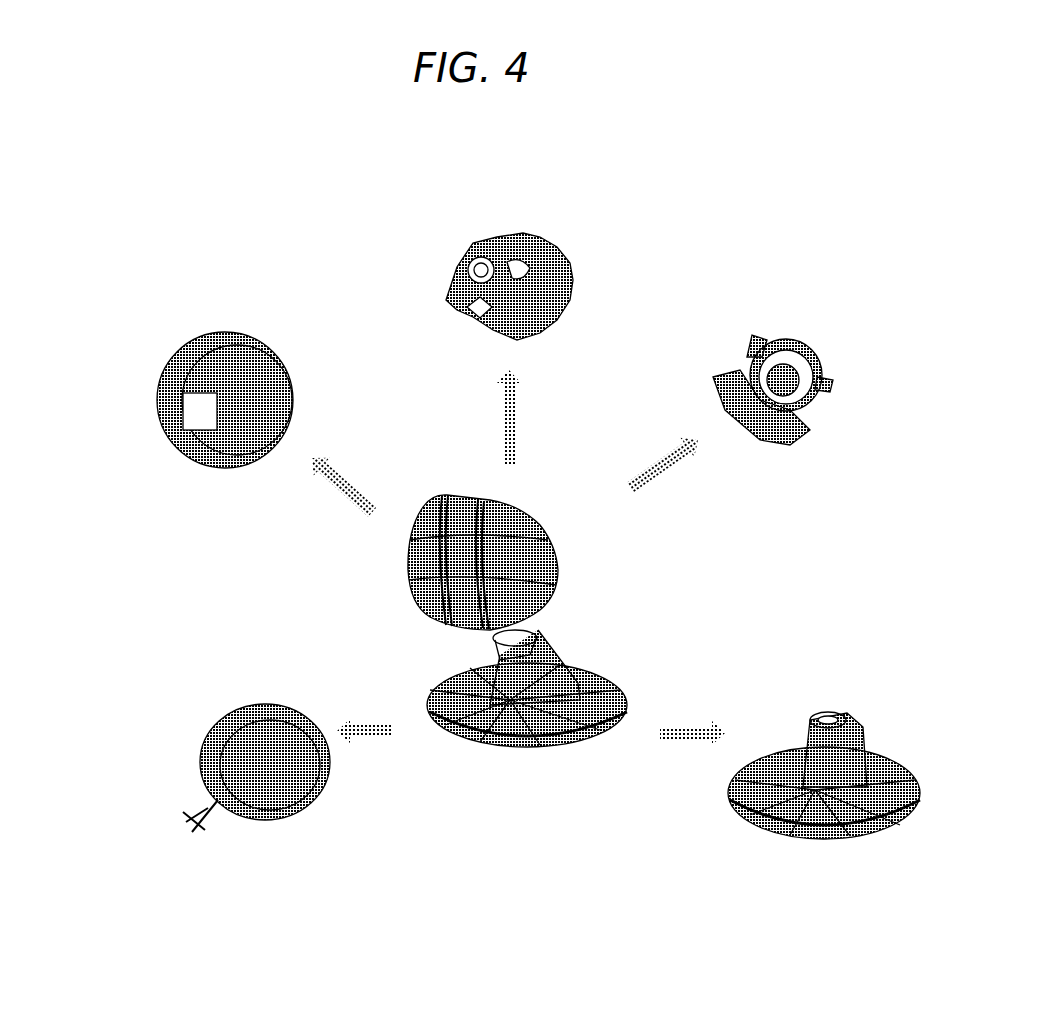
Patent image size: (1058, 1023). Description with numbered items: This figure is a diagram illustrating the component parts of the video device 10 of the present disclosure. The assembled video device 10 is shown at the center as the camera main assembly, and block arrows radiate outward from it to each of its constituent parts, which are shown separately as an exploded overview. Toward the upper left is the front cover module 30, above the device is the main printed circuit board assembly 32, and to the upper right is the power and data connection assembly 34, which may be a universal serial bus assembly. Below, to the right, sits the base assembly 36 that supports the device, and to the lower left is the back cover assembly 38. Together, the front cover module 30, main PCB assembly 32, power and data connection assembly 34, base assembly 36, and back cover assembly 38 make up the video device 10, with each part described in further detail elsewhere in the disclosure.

The video device 10 is at (585, 582).
The front cover module 30 is at (140, 452).
The main printed circuit board (PCB) assembly 32 is at (588, 246).
The power and data connection (USB) assembly 34 is at (823, 326).
The base assembly 36 is at (873, 702).
The back cover assembly 38 is at (320, 817).